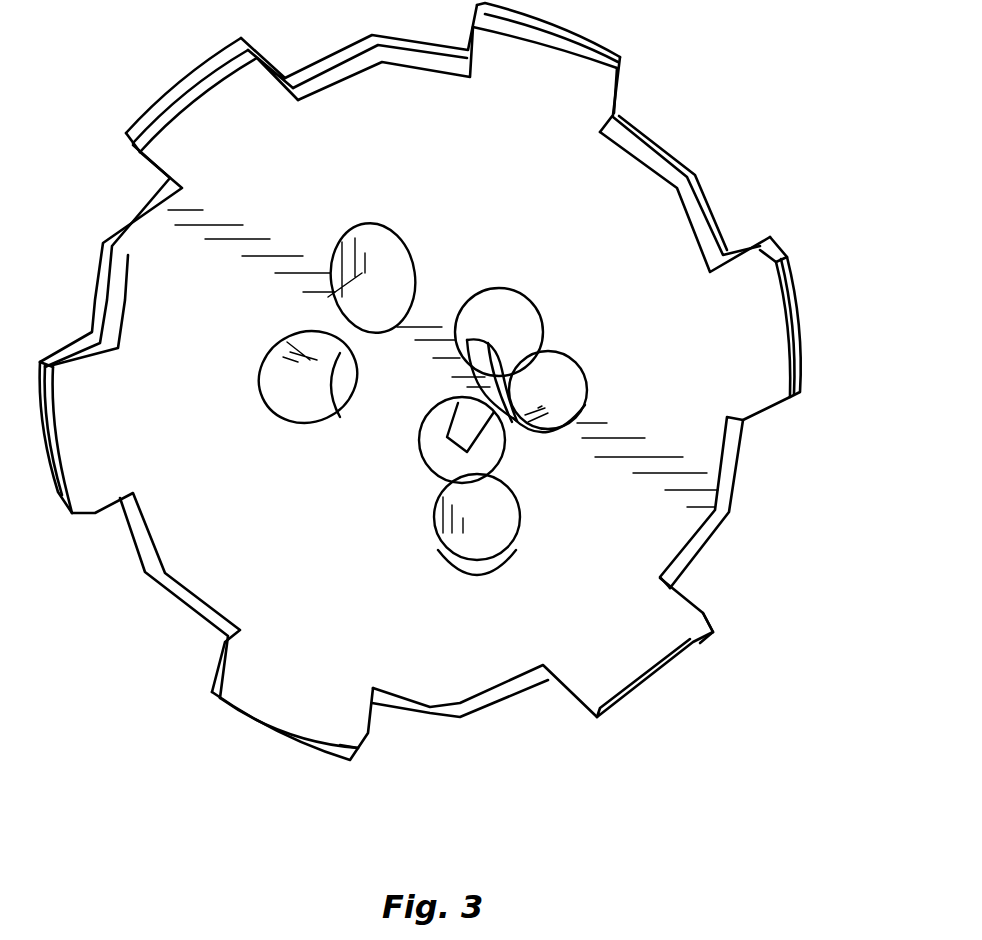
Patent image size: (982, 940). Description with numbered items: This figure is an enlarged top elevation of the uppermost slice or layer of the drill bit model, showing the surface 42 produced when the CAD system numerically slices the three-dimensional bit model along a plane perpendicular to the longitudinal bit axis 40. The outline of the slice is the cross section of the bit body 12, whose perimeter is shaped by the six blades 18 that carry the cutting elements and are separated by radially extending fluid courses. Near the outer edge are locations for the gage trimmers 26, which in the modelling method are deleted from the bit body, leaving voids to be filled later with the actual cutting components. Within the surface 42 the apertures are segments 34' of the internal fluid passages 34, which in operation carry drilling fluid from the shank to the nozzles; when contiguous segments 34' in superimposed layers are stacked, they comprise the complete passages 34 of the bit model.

The bit body 12 is at (461, 381).
The blades 18 is at (795, 312).
The gage trimmers 26 is at (778, 256).
The internal fluid passages 34 is at (347, 384).
The segments of internal fluid passages 34' is at (308, 416).
The longitudinal bit axis 40 is at (418, 380).
The surface 42 is at (622, 200).